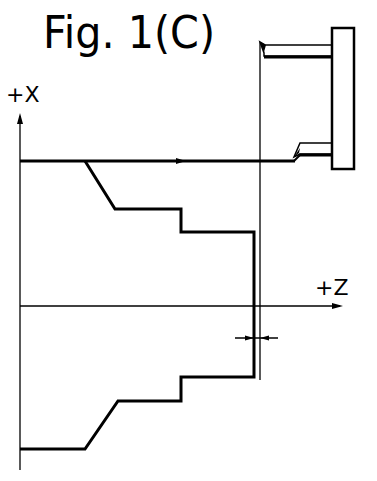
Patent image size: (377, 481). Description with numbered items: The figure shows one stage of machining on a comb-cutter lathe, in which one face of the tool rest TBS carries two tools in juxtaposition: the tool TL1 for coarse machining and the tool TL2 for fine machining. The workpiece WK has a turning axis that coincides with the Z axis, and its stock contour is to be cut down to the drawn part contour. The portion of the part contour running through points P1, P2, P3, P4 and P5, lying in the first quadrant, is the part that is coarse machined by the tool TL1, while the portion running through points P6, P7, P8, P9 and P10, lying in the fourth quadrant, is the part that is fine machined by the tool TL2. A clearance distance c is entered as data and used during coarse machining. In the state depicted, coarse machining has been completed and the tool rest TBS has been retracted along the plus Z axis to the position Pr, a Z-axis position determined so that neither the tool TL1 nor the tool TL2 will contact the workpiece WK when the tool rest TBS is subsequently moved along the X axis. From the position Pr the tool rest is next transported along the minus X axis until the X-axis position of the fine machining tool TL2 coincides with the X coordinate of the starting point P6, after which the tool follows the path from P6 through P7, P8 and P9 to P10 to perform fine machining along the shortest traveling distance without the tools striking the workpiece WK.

The workpiece WK is at (46, 175).
The part contour point P1 is at (77, 181).
The part contour point P2 is at (112, 225).
The part contour point P3 is at (202, 205).
The part contour point P4 is at (180, 250).
The part contour point P5 is at (275, 235).
The fine machining starting point P6 is at (257, 390).
The part contour point P7 is at (182, 360).
The part contour point P8 is at (184, 415).
The part contour point P9 is at (112, 385).
The part contour point P10 is at (97, 465).
The clearance distance c is at (258, 336).
The tool for coarse machining TL1 is at (316, 156).
The tool for fine machining TL2 is at (297, 43).
The tool rest TBS is at (333, 119).
The Z-axis position Pr is at (343, 98).